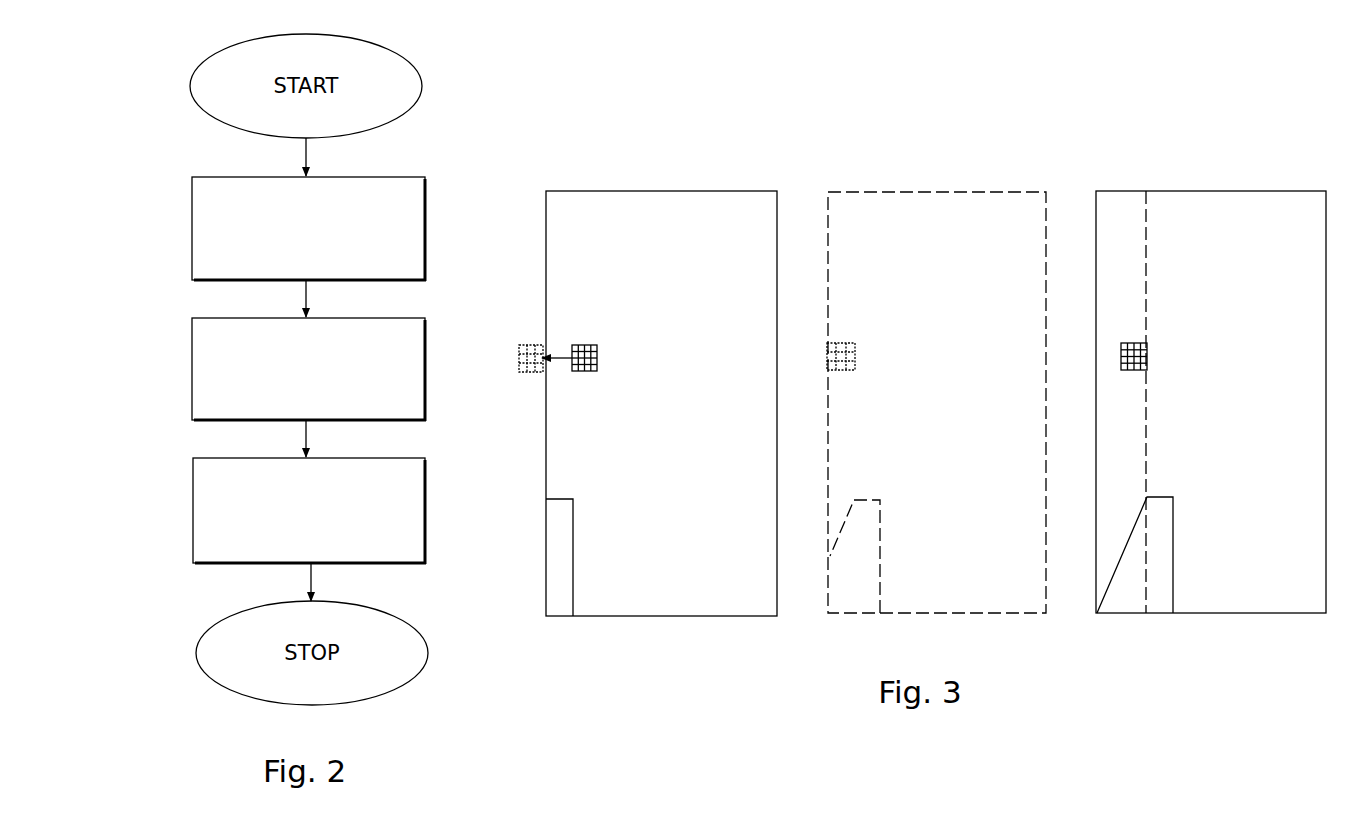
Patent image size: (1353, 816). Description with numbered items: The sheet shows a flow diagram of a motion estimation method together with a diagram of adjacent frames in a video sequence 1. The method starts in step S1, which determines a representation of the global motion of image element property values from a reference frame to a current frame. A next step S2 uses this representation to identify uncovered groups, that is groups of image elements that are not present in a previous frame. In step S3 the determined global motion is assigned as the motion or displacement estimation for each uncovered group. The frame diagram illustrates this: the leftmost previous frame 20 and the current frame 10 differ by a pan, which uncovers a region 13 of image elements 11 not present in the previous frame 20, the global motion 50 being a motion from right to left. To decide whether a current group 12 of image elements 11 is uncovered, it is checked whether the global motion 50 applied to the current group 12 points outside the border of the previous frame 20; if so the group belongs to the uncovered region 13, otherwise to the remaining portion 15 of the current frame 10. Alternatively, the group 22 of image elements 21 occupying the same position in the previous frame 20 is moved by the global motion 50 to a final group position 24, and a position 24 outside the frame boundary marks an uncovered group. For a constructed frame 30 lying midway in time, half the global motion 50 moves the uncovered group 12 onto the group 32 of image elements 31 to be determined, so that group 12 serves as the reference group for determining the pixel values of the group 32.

In FIG. 2, the global motion determining step S1 is at (192, 236).
In FIG. 2, the uncovered group identifying step S2 is at (192, 374).
In FIG. 2, the global motion assigning step S3 is at (193, 516).
In FIG. 3, the video sequence 1 is at (596, 127).
In FIG. 3, the current frame 10 is at (1210, 613).
In FIG. 3, the image elements 11 is at (1143, 372).
In FIG. 3, the current group 12 is at (1148, 360).
In FIG. 3, the uncovered region 13 is at (1122, 600).
In FIG. 3, the remaining portion 15 is at (1288, 598).
In FIG. 3, the previous frame 20 is at (664, 616).
In FIG. 3, the image elements 21 is at (600, 352).
In FIG. 3, the group 22 is at (581, 372).
In FIG. 3, the final group position 24 is at (531, 372).
In FIG. 3, the constructed frame 30 is at (937, 613).
In FIG. 3, the image elements 31 is at (850, 372).
In FIG. 3, the current group to be determined 32 is at (858, 360).
In FIG. 3, the global motion representation 50 is at (556, 355).